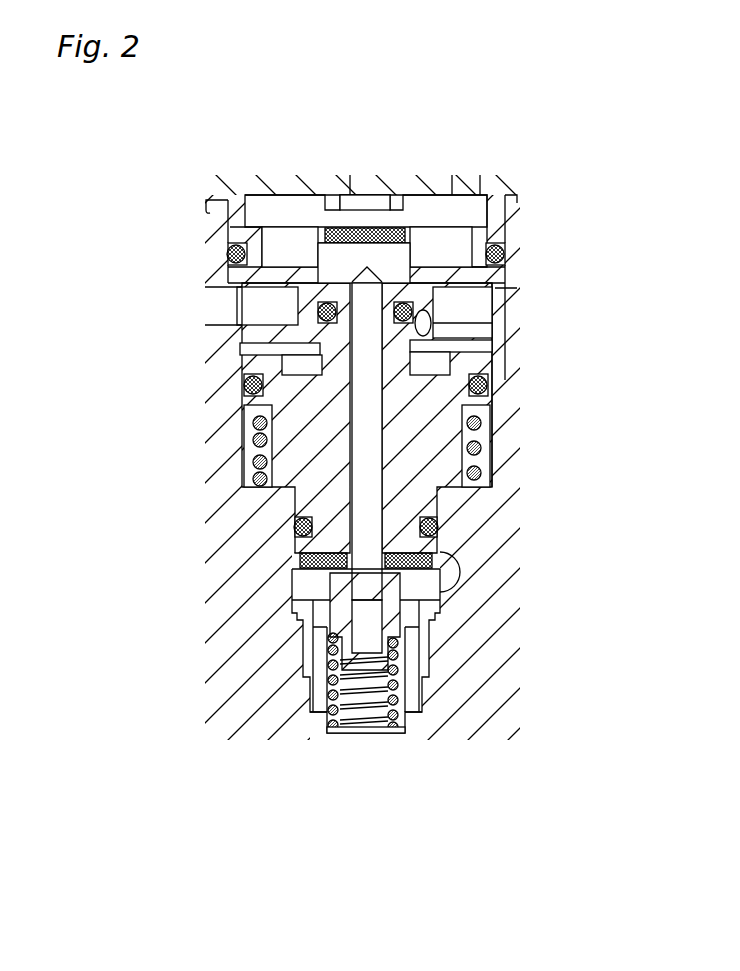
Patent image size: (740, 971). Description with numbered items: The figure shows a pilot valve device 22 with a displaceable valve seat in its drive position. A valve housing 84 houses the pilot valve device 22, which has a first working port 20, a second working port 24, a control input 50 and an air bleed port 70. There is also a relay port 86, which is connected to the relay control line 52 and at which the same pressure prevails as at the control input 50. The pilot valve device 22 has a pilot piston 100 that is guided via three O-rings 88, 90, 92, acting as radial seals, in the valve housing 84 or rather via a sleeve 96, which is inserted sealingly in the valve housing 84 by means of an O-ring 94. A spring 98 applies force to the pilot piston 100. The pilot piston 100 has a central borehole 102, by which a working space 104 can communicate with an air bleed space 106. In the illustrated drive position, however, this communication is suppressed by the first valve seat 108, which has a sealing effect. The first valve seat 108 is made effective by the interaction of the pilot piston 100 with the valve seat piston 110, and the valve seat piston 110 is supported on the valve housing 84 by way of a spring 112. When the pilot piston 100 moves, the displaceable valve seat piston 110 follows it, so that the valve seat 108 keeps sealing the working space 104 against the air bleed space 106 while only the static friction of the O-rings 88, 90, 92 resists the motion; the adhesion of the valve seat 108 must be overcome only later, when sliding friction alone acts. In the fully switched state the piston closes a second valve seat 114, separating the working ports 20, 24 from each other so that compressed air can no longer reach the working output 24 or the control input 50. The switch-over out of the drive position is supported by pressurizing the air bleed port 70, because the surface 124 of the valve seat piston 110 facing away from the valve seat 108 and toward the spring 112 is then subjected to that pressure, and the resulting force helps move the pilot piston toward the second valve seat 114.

The first working port 20 is at (372, 182).
The pilot valve device 22 is at (155, 856).
The second working port 24 is at (478, 194).
The control input 50 is at (508, 307).
The relay control line 52 is at (218, 320).
The air bleed port 70 is at (450, 573).
The valve housing 84 is at (482, 712).
The relay port 86 is at (217, 308).
The O-ring 88 is at (437, 525).
The O-ring 90 is at (490, 385).
The O-ring 92 is at (412, 312).
The O-ring 94 is at (503, 243).
The sleeve 96 is at (233, 240).
The spring 98 is at (485, 448).
The pilot piston 100 is at (325, 508).
The central borehole 102 is at (362, 455).
The working space 104 is at (288, 208).
The air bleed space 106 is at (303, 573).
The first valve seat 108 is at (295, 598).
The valve seat piston 110 is at (395, 625).
The spring 112 is at (373, 710).
The second valve seat 114 is at (390, 214).
The surface 124 is at (327, 713).